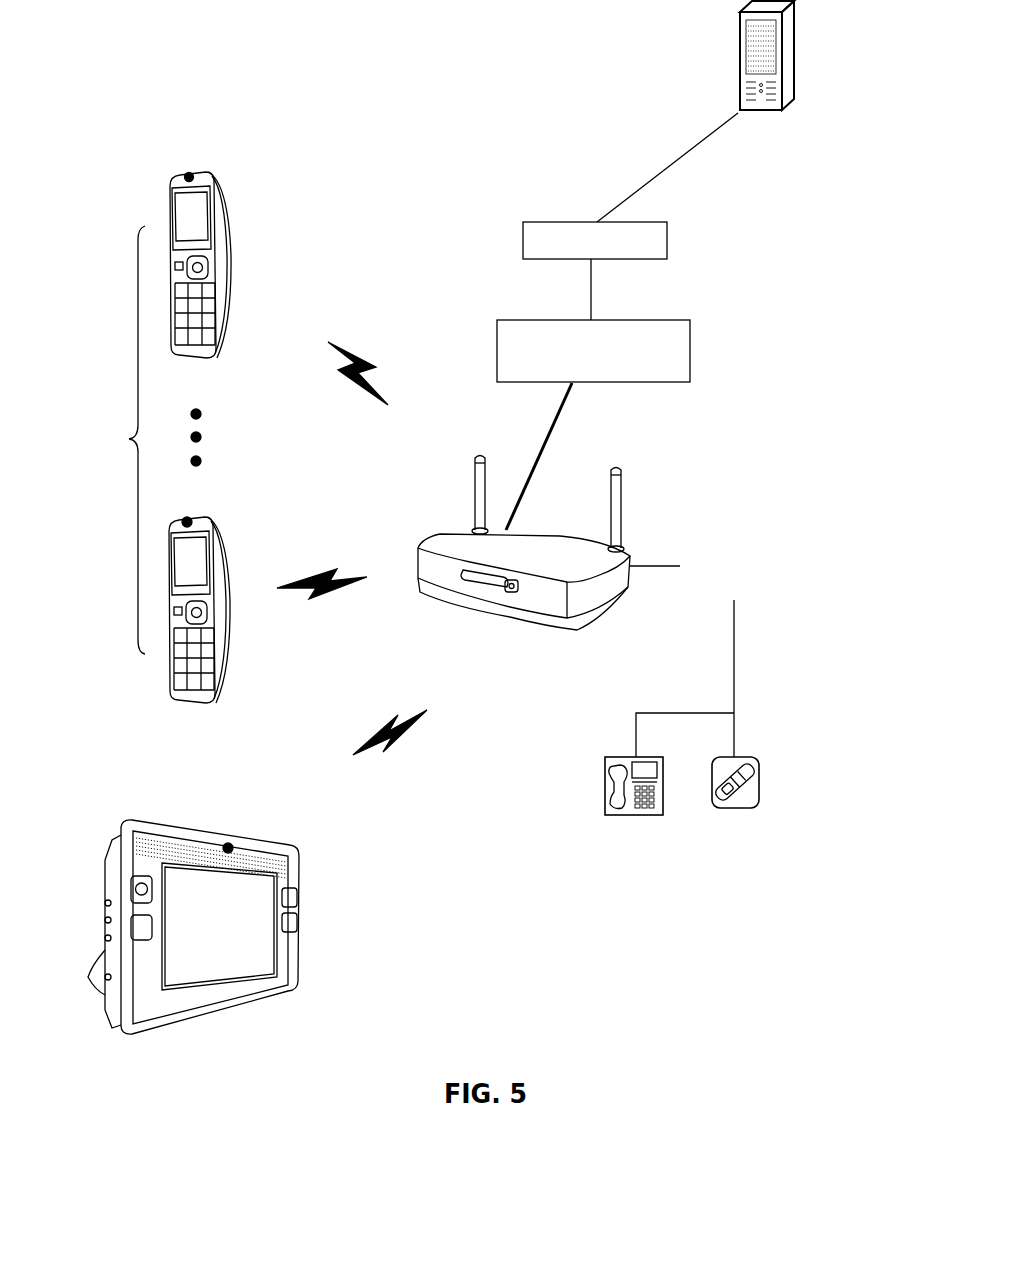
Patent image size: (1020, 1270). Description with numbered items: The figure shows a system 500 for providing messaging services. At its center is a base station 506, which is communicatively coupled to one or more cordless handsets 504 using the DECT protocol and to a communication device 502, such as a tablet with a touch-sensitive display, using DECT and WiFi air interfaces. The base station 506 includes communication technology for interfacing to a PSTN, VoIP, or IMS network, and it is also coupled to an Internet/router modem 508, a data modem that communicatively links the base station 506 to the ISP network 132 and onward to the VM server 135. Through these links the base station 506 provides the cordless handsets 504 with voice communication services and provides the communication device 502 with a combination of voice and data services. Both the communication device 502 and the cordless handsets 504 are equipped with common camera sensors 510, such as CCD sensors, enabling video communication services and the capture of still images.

The system 500 is at (500, 1060).
The VM server 135 is at (727, 73).
The ISP network 132 is at (655, 255).
The Internet/router modem 508 is at (680, 375).
The base station 506 is at (582, 628).
The cordless handset 504 is at (223, 544).
The camera sensor 510 is at (190, 518).
The communication device 502 is at (123, 822).